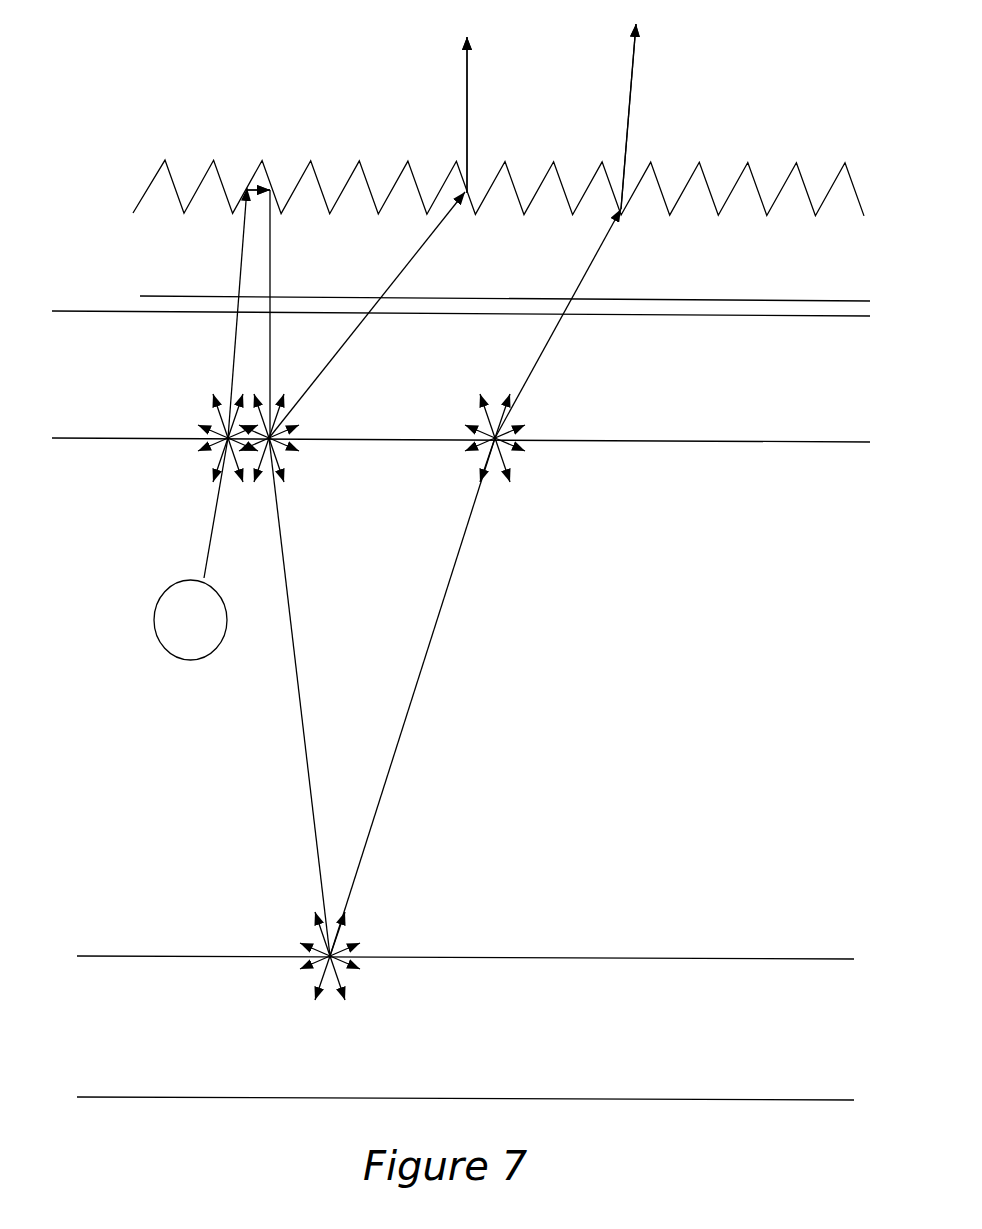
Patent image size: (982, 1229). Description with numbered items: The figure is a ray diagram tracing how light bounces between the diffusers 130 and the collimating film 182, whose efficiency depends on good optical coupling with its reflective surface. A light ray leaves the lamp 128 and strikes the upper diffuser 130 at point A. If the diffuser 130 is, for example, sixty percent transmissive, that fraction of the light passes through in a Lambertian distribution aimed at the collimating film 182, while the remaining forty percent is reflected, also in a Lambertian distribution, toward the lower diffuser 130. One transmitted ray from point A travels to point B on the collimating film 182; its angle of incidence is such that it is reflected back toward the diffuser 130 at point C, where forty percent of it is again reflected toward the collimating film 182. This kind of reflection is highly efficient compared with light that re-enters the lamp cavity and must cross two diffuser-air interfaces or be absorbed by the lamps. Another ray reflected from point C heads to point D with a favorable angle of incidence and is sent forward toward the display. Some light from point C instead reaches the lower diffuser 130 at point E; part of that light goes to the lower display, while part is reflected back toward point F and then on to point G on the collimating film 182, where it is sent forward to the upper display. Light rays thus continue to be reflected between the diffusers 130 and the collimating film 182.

The collimating film 182 is at (163, 273).
The diffuser 130 is at (108, 401).
The lamp 128 is at (170, 602).
The point A is at (211, 445).
The point B is at (257, 150).
The point C is at (282, 445).
The point D is at (442, 115).
The point E is at (349, 941).
The point F is at (500, 450).
The point G is at (618, 116).